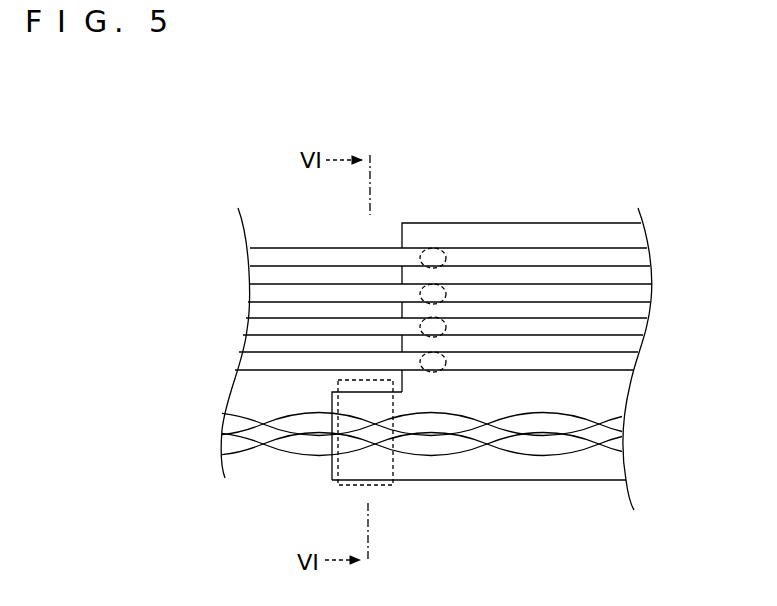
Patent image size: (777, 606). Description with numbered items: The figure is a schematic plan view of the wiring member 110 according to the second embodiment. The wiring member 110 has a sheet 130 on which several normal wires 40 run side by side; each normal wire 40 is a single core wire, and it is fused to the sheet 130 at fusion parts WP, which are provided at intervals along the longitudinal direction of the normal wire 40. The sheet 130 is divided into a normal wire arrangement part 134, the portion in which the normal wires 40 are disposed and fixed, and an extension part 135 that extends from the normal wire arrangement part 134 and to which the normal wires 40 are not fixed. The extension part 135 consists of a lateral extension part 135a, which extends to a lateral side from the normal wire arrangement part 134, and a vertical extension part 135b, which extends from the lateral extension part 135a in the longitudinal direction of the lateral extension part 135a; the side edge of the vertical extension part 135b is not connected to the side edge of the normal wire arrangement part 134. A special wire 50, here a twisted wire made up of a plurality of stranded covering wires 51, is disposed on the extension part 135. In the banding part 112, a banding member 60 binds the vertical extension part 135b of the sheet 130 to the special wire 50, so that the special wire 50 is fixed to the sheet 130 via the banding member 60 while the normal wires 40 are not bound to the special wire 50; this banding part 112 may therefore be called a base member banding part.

The wiring member 110 is at (183, 112).
The sheet 130 is at (548, 222).
The normal wire arrangement part 134 is at (630, 313).
The normal wire 40 is at (260, 257).
The fusion part WP is at (457, 283).
The extension part 135 is at (533, 543).
The lateral extension part 135a is at (497, 470).
The vertical extension part 135b is at (380, 468).
The banding part 112 is at (392, 506).
The banding member 60 is at (343, 488).
The special wire 50 is at (618, 545).
The covering wire 51 is at (548, 447).